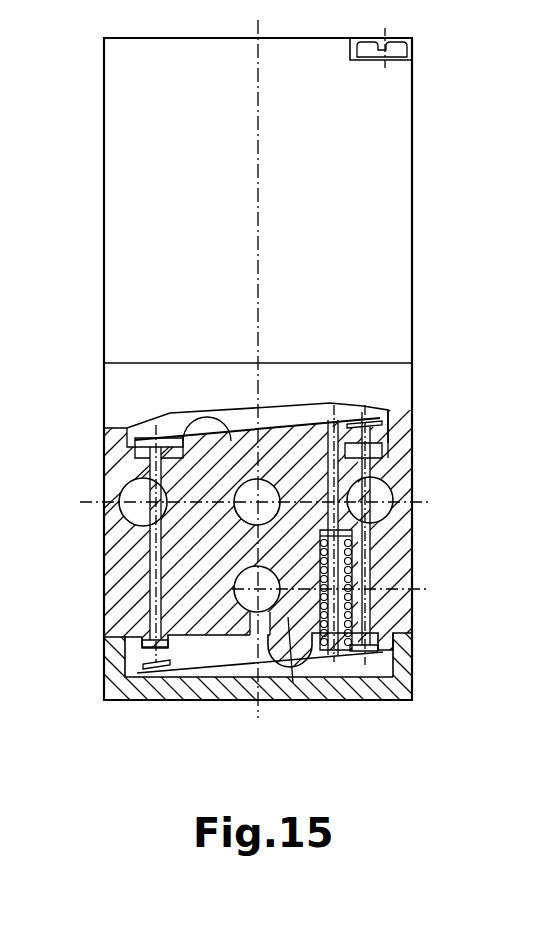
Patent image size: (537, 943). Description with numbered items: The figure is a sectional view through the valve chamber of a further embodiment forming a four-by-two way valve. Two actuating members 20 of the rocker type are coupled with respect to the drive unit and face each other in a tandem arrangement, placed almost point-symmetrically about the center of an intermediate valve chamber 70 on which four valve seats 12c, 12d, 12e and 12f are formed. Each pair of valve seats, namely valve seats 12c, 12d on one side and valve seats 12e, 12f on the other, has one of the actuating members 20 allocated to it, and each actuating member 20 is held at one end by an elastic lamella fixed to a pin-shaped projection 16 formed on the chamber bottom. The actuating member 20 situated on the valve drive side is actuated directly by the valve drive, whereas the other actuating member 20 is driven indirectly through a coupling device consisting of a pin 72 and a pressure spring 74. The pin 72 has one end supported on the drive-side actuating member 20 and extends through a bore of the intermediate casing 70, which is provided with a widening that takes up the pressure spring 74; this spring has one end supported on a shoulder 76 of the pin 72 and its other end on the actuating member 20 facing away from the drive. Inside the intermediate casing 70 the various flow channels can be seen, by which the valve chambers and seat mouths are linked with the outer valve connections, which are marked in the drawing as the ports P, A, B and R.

The intermediate valve chamber 70 is at (403, 553).
The pin 72 is at (340, 445).
The pressure spring 74 is at (343, 587).
The shoulder 76 is at (400, 527).
The actuating member 20 is at (220, 667).
The pin-shaped projection 16 is at (270, 641).
The valve seat 12c is at (142, 640).
The valve seat 12d is at (380, 640).
The valve seat 12e is at (135, 453).
The valve seat 12f is at (385, 450).
The return port R is at (133, 493).
The port B is at (250, 513).
The port A is at (235, 590).
The pressure port P is at (380, 491).